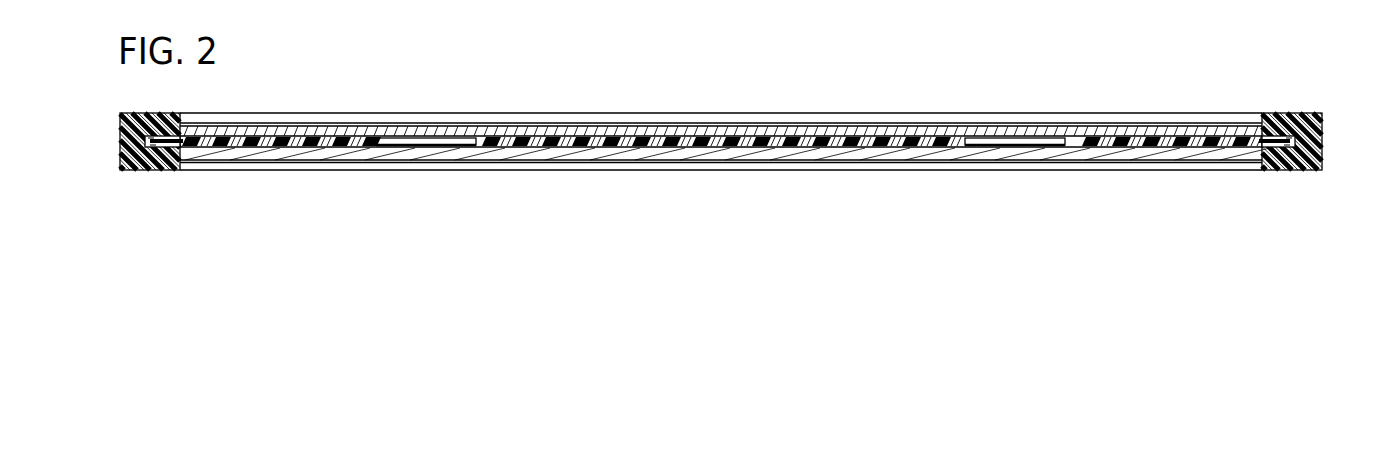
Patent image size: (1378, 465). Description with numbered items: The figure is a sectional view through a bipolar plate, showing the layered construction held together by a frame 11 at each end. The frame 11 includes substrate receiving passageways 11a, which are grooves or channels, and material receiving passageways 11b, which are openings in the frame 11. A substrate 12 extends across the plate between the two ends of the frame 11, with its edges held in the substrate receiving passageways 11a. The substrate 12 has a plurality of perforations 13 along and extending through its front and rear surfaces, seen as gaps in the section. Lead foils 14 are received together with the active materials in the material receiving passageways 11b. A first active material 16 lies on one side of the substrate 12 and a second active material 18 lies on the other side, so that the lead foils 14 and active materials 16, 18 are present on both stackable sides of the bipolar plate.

The frame 11 is at (120, 172).
The substrate receiving passageways 11a is at (148, 117).
The material receiving passageways 11b is at (1255, 118).
The substrate 12 is at (166, 171).
The perforations 13 is at (440, 146).
The lead foils 14 is at (500, 150).
The first active material 16 is at (1152, 130).
The second active material 18 is at (1154, 157).